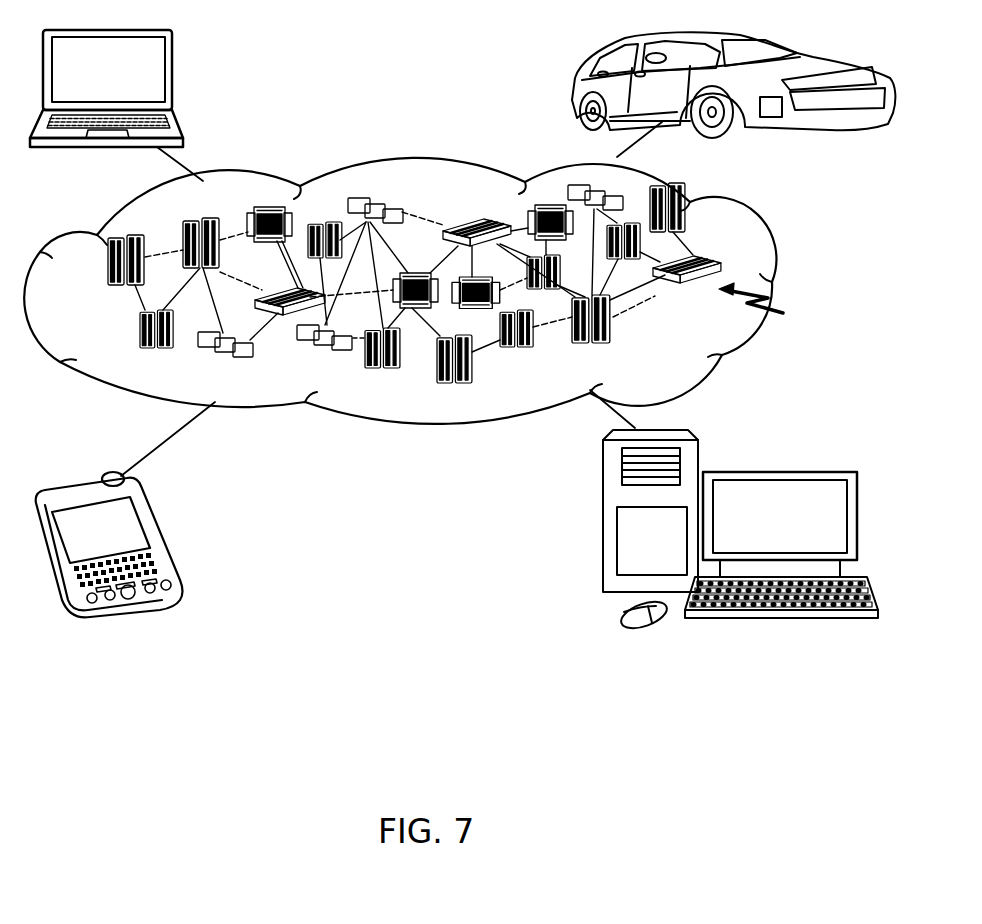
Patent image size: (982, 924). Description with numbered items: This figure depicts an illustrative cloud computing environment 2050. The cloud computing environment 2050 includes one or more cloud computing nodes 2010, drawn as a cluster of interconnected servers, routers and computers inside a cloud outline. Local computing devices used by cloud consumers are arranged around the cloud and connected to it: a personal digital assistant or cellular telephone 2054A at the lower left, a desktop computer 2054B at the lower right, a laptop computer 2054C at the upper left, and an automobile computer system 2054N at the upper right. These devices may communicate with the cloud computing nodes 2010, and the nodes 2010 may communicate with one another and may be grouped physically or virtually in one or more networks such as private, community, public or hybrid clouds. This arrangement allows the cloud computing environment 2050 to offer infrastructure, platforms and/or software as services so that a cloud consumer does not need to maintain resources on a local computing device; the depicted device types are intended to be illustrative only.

The cloud computing environment 2050 is at (776, 269).
The cloud computing nodes 2010 is at (777, 304).
The personal digital assistant or cellular telephone 2054A is at (161, 536).
The desktop computer 2054B is at (788, 456).
The laptop computer 2054C is at (171, 74).
The automobile computer system 2054N is at (572, 90).